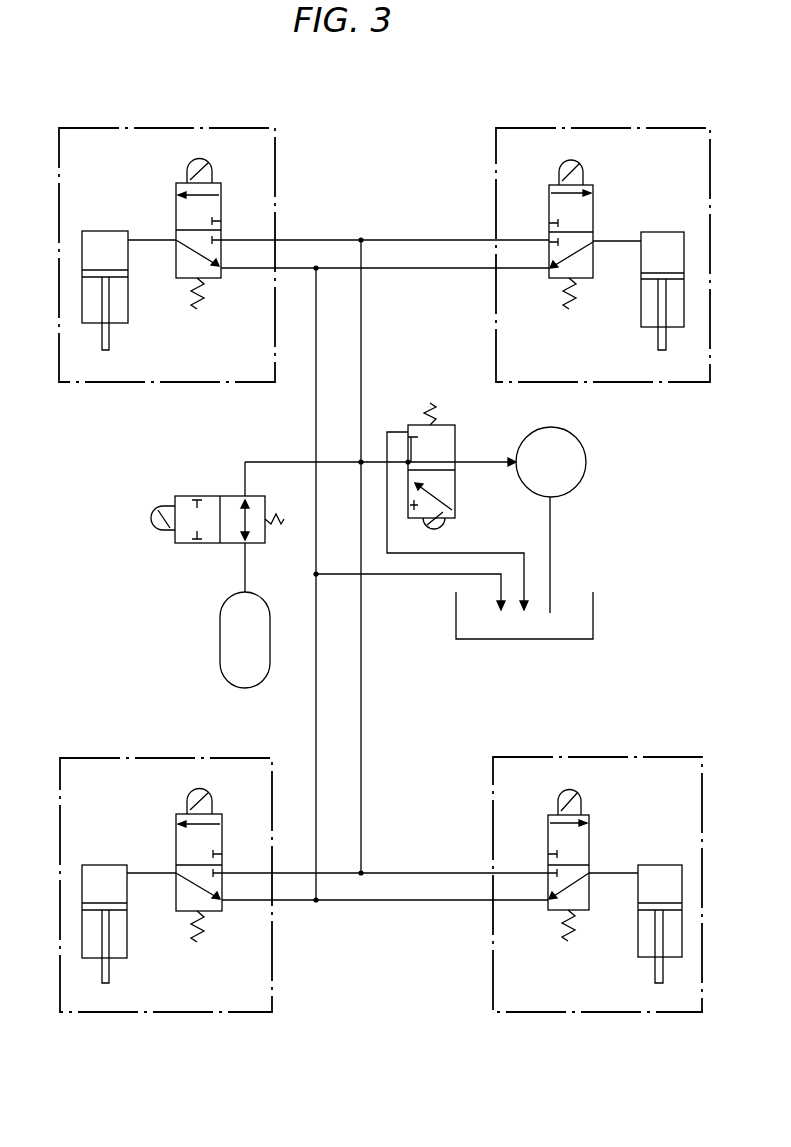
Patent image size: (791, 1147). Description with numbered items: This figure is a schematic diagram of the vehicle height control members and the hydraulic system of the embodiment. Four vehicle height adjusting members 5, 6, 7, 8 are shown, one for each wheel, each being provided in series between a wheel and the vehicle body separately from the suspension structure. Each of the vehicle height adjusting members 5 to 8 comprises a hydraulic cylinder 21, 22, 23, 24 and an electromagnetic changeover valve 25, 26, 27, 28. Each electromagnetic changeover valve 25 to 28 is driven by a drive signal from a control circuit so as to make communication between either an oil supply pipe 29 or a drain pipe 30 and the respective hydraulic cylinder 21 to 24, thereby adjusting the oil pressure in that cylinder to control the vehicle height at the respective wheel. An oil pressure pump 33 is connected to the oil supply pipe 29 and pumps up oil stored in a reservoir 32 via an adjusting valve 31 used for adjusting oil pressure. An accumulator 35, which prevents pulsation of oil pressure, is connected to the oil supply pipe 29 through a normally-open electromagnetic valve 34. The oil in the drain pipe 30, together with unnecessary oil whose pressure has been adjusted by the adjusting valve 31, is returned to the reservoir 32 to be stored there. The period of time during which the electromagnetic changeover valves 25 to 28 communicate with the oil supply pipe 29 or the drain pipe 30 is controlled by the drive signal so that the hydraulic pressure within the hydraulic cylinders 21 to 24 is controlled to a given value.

The vehicle height adjusting member 5 is at (183, 128).
The vehicle height adjusting member 6 is at (536, 128).
The vehicle height adjusting member 7 is at (163, 758).
The vehicle height adjusting member 8 is at (599, 757).
The hydraulic cylinder 21 is at (110, 231).
The hydraulic cylinder 22 is at (657, 232).
The hydraulic cylinder 23 is at (114, 865).
The hydraulic cylinder 24 is at (650, 865).
The electromagnetic changeover valve 25 is at (221, 206).
The electromagnetic changeover valve 26 is at (549, 206).
The electromagnetic changeover valve 27 is at (222, 834).
The electromagnetic changeover valve 28 is at (548, 832).
The oil supply pipe 29 is at (410, 240).
The drain pipe 30 is at (415, 268).
The adjusting valve 31 is at (448, 425).
The reservoir 32 is at (594, 610).
The oil pressure pump 33 is at (586, 462).
The normally-open electromagnetic valve 34 is at (195, 496).
The accumulator 35 is at (220, 644).